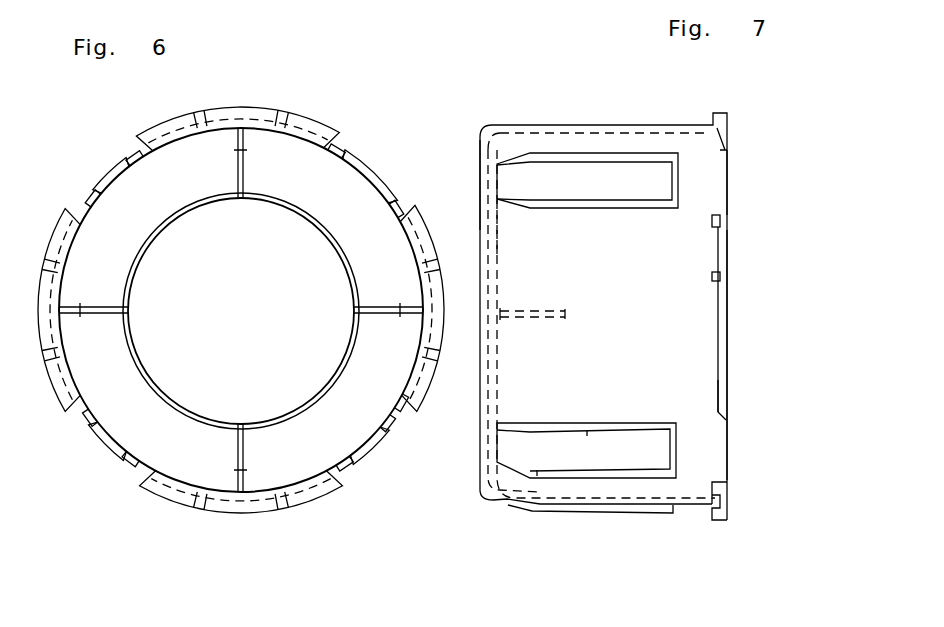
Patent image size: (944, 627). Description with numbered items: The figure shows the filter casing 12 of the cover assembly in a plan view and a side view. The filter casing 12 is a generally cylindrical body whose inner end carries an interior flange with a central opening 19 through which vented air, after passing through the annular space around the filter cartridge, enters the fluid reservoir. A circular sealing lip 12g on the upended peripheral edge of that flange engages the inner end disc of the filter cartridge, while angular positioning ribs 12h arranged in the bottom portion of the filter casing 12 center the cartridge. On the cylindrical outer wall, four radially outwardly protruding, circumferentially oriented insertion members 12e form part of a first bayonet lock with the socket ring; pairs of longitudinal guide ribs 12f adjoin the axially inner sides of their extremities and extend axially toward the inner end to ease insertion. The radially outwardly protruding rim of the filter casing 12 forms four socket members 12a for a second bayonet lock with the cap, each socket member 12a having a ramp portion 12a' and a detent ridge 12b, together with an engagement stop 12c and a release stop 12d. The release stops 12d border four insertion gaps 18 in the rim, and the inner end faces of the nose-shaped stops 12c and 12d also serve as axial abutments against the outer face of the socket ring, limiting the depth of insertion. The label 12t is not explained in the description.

In FIG. 6, the filter casing 12 is at (266, 96).
In FIG. 7, the filter casing 12 is at (601, 113).
In FIG. 6, the insertion gaps 18 is at (137, 146).
In FIG. 7, the insertion gaps 18 is at (726, 175).
In FIG. 6, the central opening 19 is at (258, 316).
In FIG. 7, the central opening 19 is at (489, 232).
In FIG. 6, the socket members 12a is at (241, 385).
In FIG. 7, the socket members 12a is at (760, 355).
In FIG. 7, the ramp portion 12a' is at (659, 396).
In FIG. 6, the detent ridge 12b is at (279, 507).
In FIG. 7, the detent ridge 12b is at (718, 358).
In FIG. 6, the engagement stop 12c is at (418, 358).
In FIG. 7, the engagement stop 12c is at (712, 277).
In FIG. 6, the release stop 12d is at (410, 412).
In FIG. 7, the release stop 12d is at (720, 221).
In FIG. 6, the insertion members 12e is at (97, 452).
In FIG. 7, the insertion members 12e is at (680, 180).
In FIG. 6, the guide ribs 12f is at (87, 193).
In FIG. 7, the guide ribs 12f is at (537, 470).
In FIG. 6, the sealing lip 12g is at (316, 240).
In FIG. 6, the angular positioning ribs 12h is at (236, 180).
In FIG. 7, the angular positioning ribs 12h is at (516, 135).
In FIG. 6, the flange face 12t is at (152, 427).
In FIG. 7, the flange face 12t is at (483, 163).